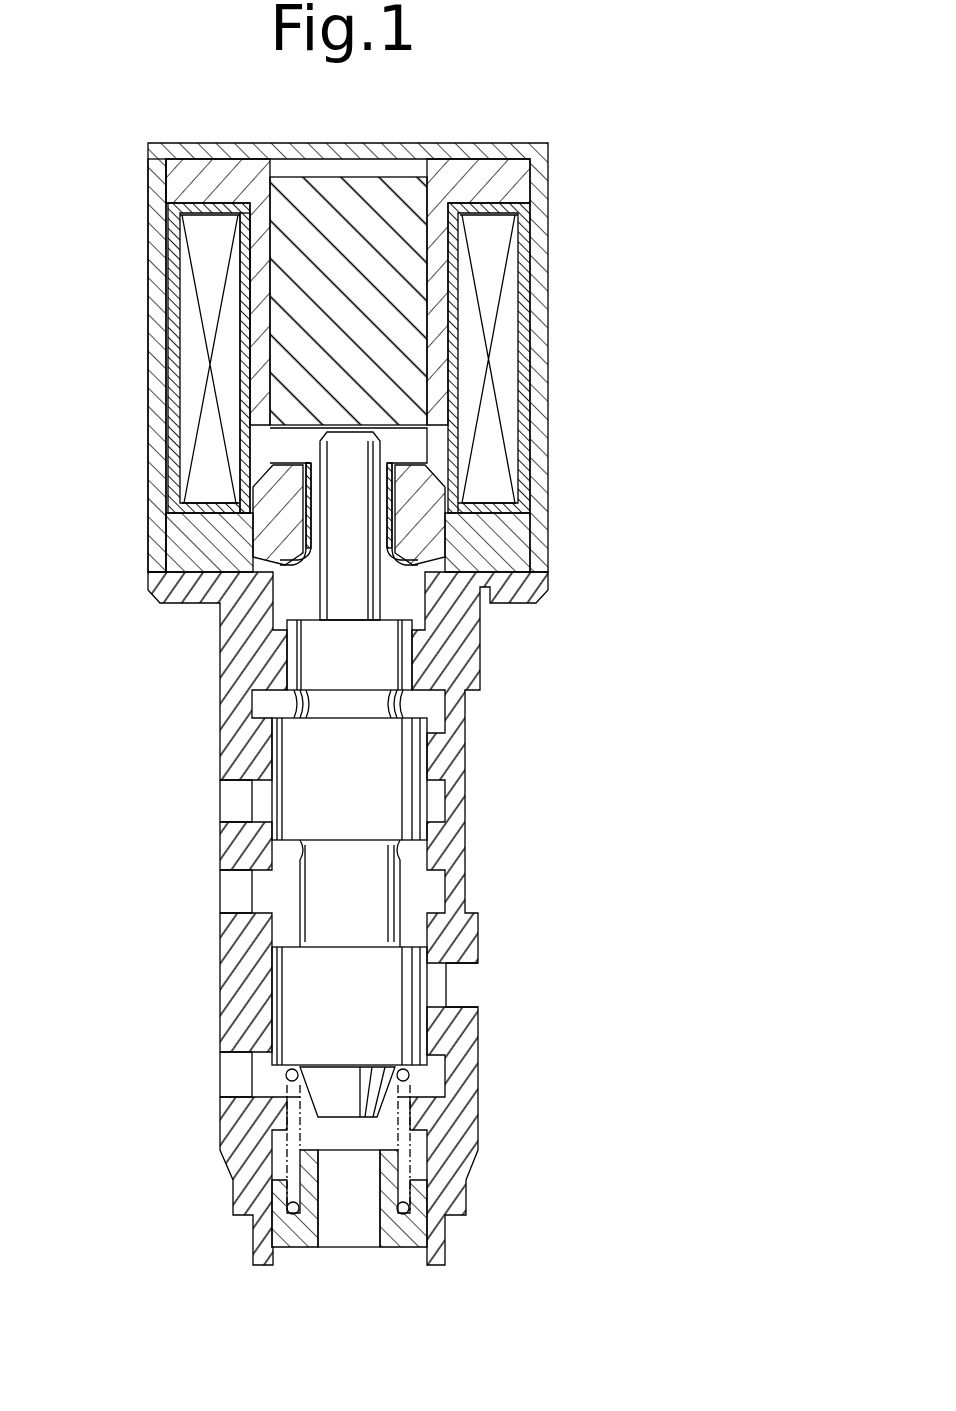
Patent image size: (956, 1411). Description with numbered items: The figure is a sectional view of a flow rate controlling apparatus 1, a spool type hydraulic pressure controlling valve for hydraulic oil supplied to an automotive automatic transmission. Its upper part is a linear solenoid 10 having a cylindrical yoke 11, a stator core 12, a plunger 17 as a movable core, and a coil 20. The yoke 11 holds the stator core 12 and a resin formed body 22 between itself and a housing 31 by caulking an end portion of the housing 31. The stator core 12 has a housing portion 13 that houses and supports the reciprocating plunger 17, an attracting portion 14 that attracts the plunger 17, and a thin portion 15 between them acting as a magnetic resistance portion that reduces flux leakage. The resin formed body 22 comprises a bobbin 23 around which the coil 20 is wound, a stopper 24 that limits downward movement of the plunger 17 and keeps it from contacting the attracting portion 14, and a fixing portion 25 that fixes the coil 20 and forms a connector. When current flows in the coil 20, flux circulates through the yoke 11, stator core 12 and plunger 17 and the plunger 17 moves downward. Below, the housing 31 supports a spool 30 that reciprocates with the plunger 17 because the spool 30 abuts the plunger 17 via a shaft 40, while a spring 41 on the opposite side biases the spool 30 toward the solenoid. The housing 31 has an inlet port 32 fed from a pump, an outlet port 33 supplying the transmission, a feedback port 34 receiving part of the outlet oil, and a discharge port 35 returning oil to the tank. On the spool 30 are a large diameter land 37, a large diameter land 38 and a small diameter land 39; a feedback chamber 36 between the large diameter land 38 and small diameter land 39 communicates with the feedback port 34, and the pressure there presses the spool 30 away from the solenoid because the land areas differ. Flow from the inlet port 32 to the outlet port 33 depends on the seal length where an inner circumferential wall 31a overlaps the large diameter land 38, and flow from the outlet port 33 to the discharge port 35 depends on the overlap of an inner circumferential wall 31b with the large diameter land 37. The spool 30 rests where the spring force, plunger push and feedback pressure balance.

The flow rate controlling apparatus 1 is at (566, 131).
The linear solenoid 10 is at (568, 333).
The yoke 11 is at (548, 193).
The stator core 12 is at (452, 176).
The housing portion 13 is at (437, 307).
The attracting portion 14 is at (430, 503).
The thin portion 15 is at (438, 433).
The plunger 17 is at (337, 225).
The coil 20 is at (202, 272).
The resin formed body 22 is at (158, 432).
The bobbin 23 is at (240, 450).
The stopper 24 is at (240, 523).
The fixing portion 25 is at (177, 340).
The spool 30 is at (277, 1073).
The housing 31 is at (446, 751).
The inner circumferential wall 31a is at (284, 877).
The inner circumferential wall 31b is at (411, 915).
The inlet port 32 is at (235, 802).
The outlet port 33 is at (235, 893).
The feedback port 34 is at (233, 702).
The discharge port 35 is at (455, 988).
The feedback chamber 36 is at (268, 712).
The large diameter land 37 is at (385, 1030).
The large diameter land 38 is at (370, 805).
The small diameter land 39 is at (363, 653).
The shaft 40 is at (357, 565).
The spring 41 is at (410, 1165).